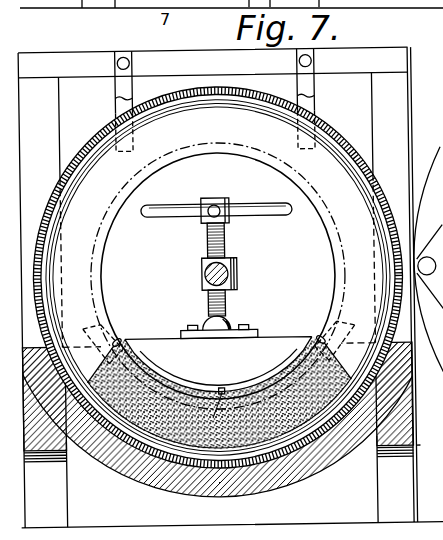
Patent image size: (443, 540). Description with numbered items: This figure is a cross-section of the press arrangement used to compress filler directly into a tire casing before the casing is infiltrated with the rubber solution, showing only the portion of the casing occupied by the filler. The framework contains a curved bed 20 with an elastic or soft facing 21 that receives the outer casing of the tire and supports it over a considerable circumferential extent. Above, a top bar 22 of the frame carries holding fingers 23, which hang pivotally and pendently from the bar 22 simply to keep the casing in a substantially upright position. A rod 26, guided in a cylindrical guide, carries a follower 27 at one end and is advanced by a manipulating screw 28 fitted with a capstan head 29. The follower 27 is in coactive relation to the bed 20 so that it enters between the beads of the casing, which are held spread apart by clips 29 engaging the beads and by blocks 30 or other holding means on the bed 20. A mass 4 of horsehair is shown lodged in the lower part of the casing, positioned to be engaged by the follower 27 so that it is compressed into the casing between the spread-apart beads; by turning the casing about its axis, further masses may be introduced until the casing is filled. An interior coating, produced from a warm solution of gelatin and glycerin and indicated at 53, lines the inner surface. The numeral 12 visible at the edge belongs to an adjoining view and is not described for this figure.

The mass of horsehair 4 is at (143, 468).
The curved bed 20 is at (322, 455).
The elastic or soft facing 21 is at (295, 453).
The top bar 22 is at (58, 60).
The holding fingers 23 is at (120, 92).
The rod 26 is at (202, 273).
The follower 27 is at (219, 378).
The manipulating screw 28 is at (227, 302).
The clips 29 is at (118, 338).
The blocks 30 is at (337, 337).
The coating of gelatin and glycerin 53 is at (380, 204).
The adjacent figure part 12 is at (419, 440).